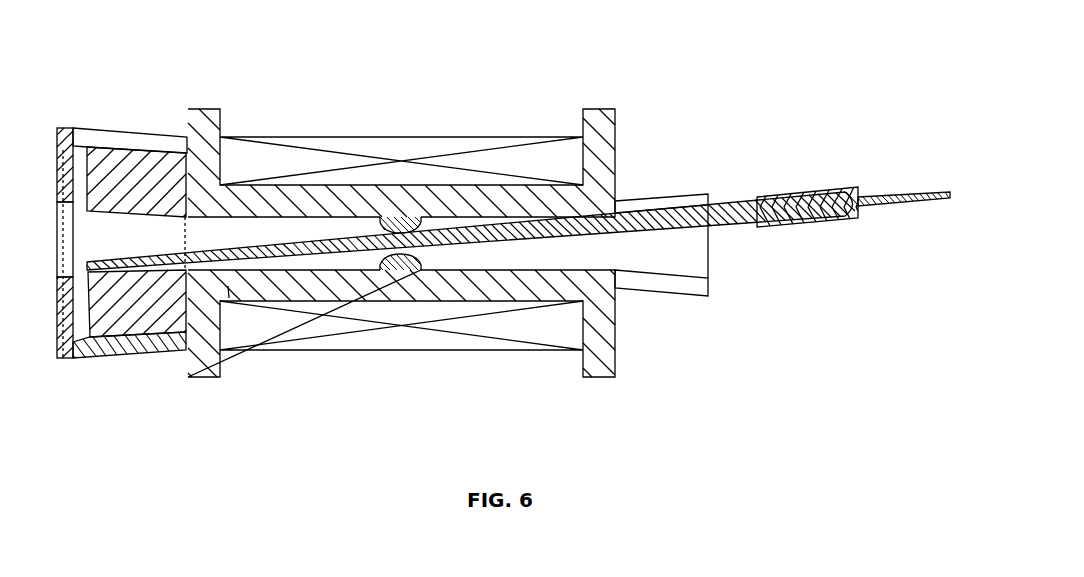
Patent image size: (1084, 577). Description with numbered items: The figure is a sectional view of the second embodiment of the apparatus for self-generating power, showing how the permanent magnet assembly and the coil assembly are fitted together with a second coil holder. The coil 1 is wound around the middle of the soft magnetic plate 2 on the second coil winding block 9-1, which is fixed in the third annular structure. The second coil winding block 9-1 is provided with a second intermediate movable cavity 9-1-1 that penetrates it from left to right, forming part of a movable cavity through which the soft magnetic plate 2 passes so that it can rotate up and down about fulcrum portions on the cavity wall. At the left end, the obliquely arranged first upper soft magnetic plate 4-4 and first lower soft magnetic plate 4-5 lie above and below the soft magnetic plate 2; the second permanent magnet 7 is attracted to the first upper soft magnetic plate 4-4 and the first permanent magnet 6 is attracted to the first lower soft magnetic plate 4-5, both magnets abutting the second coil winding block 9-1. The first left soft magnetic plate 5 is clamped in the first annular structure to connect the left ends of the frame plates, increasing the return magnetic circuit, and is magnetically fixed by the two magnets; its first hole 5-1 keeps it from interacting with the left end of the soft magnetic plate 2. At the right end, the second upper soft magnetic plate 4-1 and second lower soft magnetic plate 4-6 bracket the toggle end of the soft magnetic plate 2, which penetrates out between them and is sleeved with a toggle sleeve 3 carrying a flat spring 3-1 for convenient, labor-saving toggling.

The coil 1 is at (403, 158).
The soft magnetic plate 2 is at (297, 243).
The toggle sleeve 3 is at (772, 197).
The flat spring 3-1 is at (895, 197).
The second upper soft magnetic plate 4-1 is at (641, 211).
The first upper soft magnetic plate 4-4 is at (87, 145).
The first lower soft magnetic plate 4-5 is at (97, 343).
The second lower soft magnetic plate 4-6 is at (652, 282).
The first left soft magnetic plate 5 is at (63, 150).
The first hole 5-1 is at (63, 358).
The first permanent magnet 6 is at (148, 312).
The second permanent magnet 7 is at (150, 170).
The second coil winding block 9-1 is at (230, 288).
The second intermediate movable cavity 9-1-1 is at (478, 255).